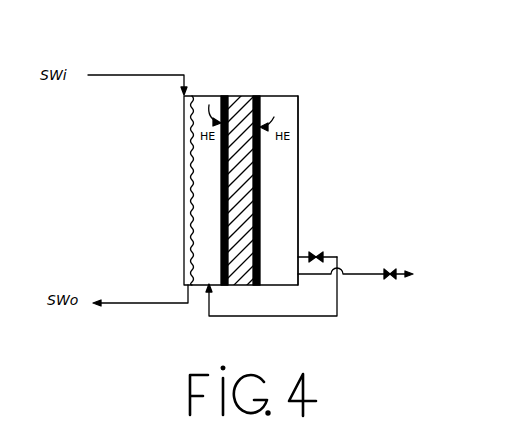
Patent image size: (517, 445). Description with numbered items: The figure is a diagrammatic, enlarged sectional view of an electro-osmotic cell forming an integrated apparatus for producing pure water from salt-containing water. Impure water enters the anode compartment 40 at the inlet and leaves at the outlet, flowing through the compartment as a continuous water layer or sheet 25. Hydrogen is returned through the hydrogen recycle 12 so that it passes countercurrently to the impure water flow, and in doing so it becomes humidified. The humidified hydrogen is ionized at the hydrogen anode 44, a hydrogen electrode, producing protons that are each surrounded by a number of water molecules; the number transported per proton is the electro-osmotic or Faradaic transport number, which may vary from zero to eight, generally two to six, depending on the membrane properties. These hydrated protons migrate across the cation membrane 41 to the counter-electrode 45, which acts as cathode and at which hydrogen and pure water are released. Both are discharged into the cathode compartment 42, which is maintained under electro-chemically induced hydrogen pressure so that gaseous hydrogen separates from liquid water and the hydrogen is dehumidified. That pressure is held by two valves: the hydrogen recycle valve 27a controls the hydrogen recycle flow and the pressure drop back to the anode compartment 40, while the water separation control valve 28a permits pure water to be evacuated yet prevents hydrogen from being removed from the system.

The anode compartment 40 is at (184, 115).
The sheet 25 is at (192, 201).
The hydrogen anode 44 is at (223, 95).
The cation membrane 41 is at (240, 95).
The counter-electrode 45 is at (257, 95).
The cathode compartment 42 is at (298, 148).
The hydrogen recycle valve 27a is at (325, 252).
The hydrogen recycle 12 is at (274, 316).
The water separation control valve 28a is at (391, 281).